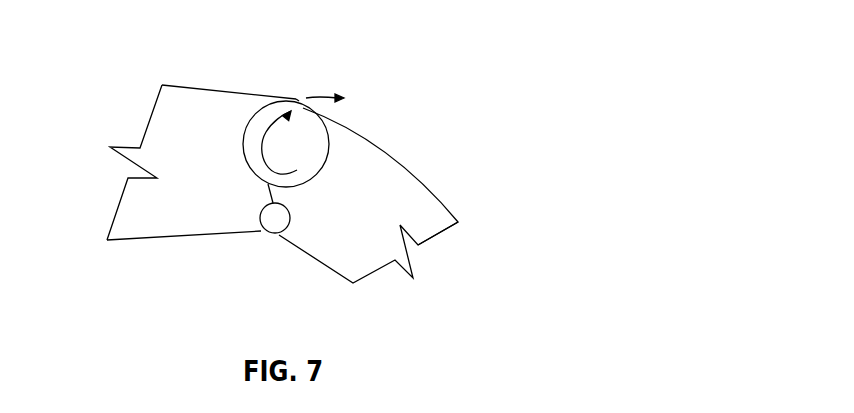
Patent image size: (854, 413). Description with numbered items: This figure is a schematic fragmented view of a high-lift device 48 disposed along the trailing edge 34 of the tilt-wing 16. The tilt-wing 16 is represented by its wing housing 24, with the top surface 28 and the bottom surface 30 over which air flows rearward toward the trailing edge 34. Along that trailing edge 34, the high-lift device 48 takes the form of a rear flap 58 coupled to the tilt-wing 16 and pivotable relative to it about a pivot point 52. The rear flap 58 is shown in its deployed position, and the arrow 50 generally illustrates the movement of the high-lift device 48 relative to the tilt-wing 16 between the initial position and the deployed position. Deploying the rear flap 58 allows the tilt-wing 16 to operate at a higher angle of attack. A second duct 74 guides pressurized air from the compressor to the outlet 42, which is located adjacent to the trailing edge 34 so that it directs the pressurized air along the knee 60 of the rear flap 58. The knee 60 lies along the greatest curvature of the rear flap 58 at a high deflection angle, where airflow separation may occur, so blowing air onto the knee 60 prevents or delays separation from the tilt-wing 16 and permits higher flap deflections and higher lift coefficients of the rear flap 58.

The tilt-wing 16 is at (509, 79).
The wing housing 24 is at (145, 130).
The top surface 28 is at (215, 92).
The bottom surface 30 is at (182, 239).
The trailing edge 34 is at (482, 141).
The outlet 42 is at (299, 94).
The high-lift device 48 is at (435, 201).
The rear flap 58 is at (476, 209).
The arrow 50 is at (384, 318).
The pivot point 52 is at (267, 236).
The knee 60 is at (348, 104).
The second duct 74 is at (316, 171).